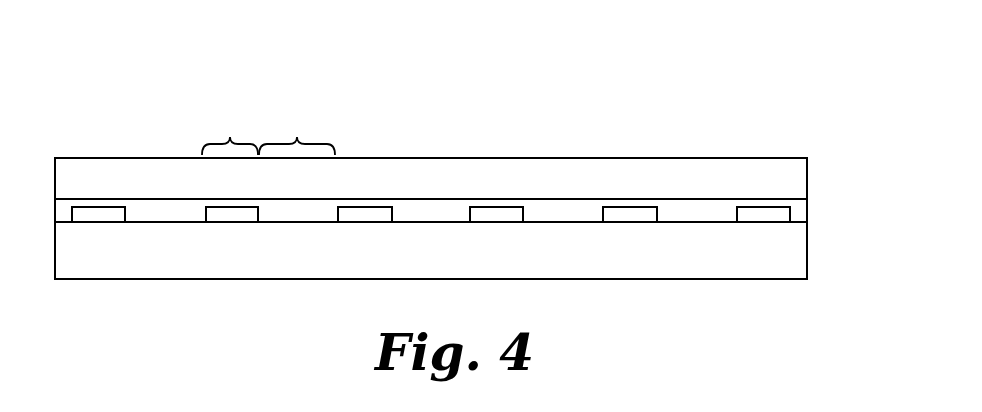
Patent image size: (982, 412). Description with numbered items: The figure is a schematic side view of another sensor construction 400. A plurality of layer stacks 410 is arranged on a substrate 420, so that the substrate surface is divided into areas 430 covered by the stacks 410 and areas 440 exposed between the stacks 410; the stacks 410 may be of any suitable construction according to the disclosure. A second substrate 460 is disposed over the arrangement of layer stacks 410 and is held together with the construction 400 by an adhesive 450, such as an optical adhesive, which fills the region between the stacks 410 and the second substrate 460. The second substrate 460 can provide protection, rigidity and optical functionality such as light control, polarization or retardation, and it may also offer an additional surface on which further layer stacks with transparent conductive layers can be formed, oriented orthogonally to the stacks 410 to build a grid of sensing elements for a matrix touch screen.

The sensor construction 400 is at (580, 88).
The layer stacks 410 is at (770, 215).
The substrate 420 is at (735, 258).
The areas covered by the stacks 430 is at (230, 129).
The areas exposed by the stacks 440 is at (297, 129).
The adhesive 450 is at (703, 207).
The second substrate 460 is at (465, 170).